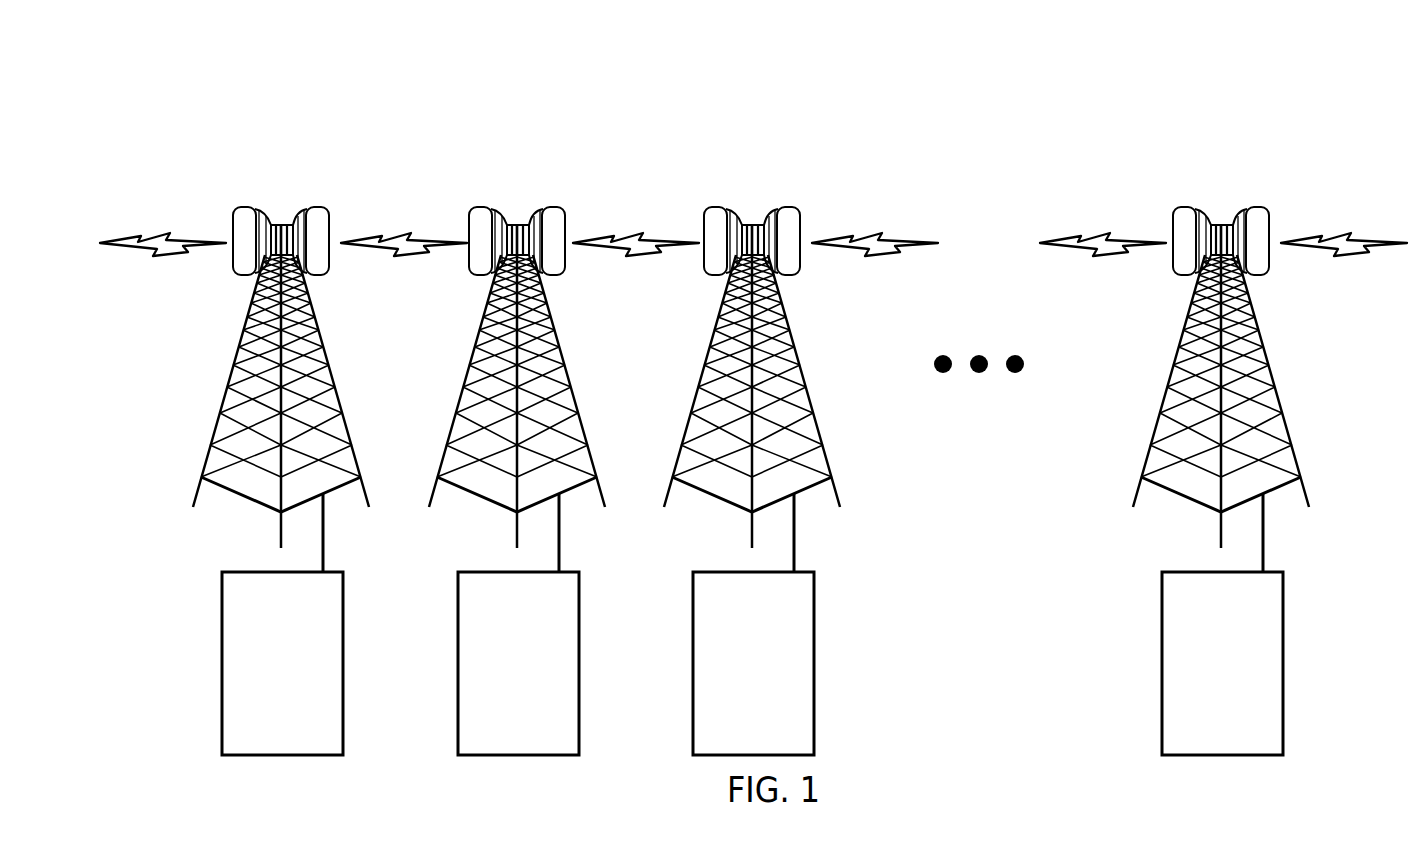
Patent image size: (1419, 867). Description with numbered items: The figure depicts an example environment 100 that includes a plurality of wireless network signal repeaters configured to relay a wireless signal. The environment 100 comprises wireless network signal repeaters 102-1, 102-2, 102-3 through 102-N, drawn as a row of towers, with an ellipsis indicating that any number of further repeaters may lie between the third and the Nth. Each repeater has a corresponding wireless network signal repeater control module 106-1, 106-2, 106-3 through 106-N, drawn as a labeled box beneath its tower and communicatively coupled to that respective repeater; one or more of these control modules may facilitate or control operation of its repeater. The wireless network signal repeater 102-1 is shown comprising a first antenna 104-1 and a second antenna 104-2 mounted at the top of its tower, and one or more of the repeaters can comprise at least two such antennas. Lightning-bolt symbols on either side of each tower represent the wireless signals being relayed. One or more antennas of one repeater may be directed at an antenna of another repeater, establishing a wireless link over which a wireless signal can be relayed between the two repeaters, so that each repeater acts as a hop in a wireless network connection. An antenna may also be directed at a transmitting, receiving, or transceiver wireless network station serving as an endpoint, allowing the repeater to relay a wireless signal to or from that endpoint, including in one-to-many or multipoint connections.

The environment 100 is at (777, 52).
The wireless network signal repeater 102-1 is at (284, 184).
The wireless network signal repeater 102-2 is at (517, 353).
The wireless network signal repeater 102-3 is at (752, 353).
The wireless network signal repeater 102-N is at (1221, 353).
The first antenna 104-1 is at (245, 208).
The second antenna 104-2 is at (318, 208).
The wireless network signal repeater control module 106-1 is at (282, 663).
The wireless network signal repeater control module 106-2 is at (518, 663).
The wireless network signal repeater control module 106-3 is at (753, 663).
The wireless network signal repeater control module 106-N is at (1222, 663).